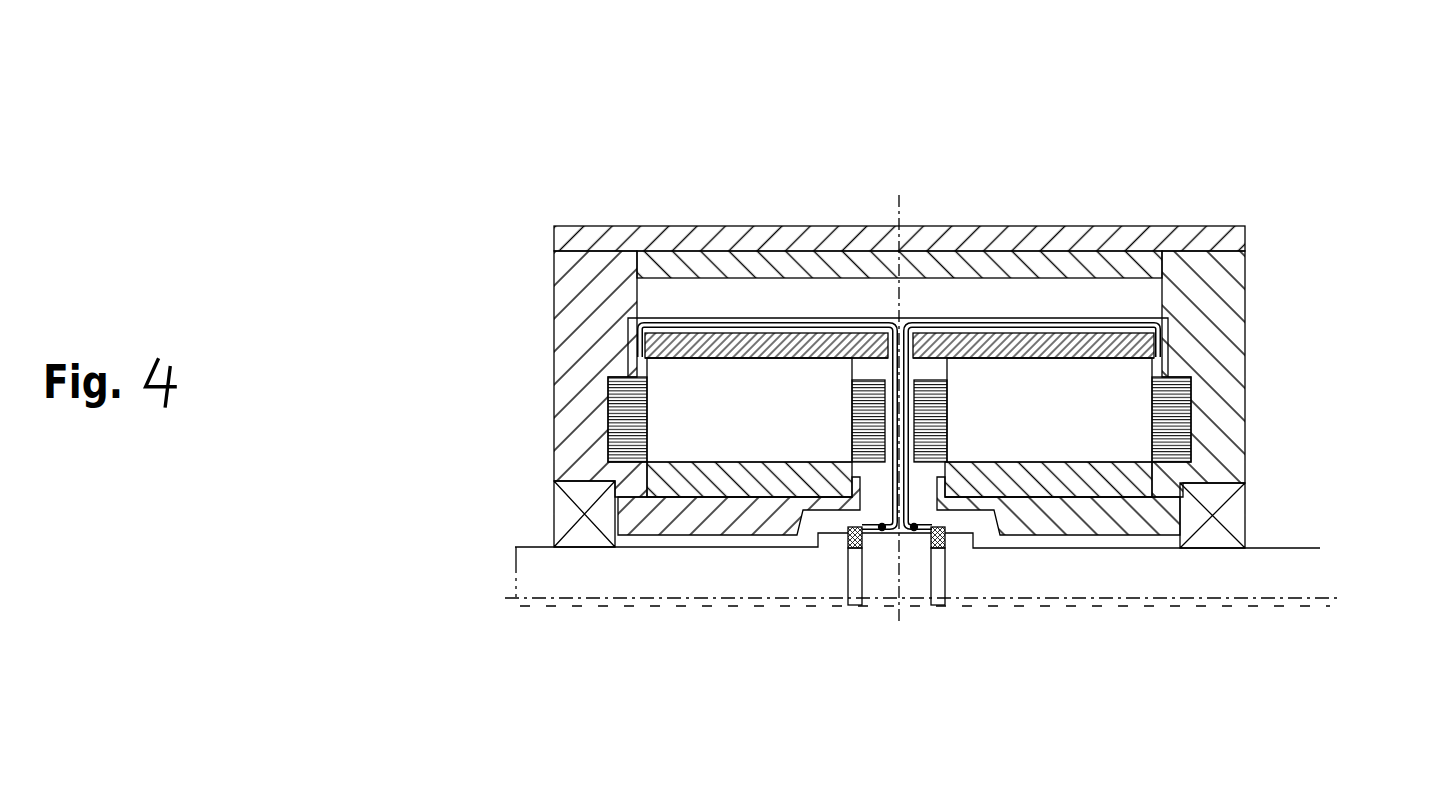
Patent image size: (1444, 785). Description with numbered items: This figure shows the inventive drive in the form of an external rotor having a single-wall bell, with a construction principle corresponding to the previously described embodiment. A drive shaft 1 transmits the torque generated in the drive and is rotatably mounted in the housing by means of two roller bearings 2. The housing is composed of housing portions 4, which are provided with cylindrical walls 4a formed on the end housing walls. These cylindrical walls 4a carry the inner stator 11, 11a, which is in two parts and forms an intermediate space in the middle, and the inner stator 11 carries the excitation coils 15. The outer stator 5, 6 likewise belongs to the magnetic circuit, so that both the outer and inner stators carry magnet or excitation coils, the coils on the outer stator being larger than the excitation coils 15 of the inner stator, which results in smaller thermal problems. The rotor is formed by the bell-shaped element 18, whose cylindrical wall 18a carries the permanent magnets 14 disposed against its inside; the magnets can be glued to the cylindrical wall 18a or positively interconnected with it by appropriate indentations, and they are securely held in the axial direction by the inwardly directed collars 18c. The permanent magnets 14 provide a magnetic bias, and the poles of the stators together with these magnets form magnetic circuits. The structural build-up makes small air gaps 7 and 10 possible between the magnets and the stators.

The drive shaft 1 is at (1308, 620).
The roller bearings 2 is at (1232, 515).
The housing portions 4 is at (1222, 454).
The cylindrical walls 4a is at (1077, 512).
The outer stator 5 is at (1077, 292).
The outer stator 6 is at (1010, 272).
The air gap 7 is at (747, 320).
The air gap 10 is at (675, 358).
The inner stator 11 is at (665, 692).
The inner stator 11a is at (748, 692).
The permanent magnets 14 is at (998, 350).
The excitation coils 15 is at (1320, 420).
The bell-shaped element 18 is at (1238, 110).
The cylindrical wall 18a is at (1162, 347).
The inwardly directed collars 18c is at (853, 660).